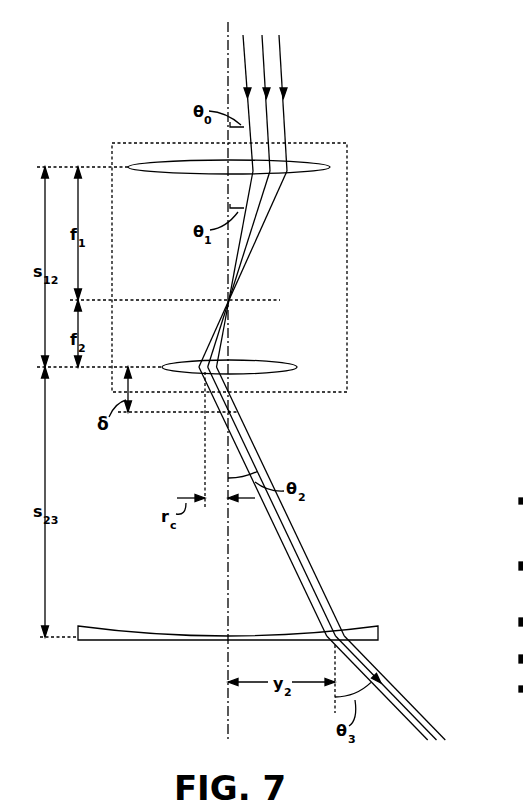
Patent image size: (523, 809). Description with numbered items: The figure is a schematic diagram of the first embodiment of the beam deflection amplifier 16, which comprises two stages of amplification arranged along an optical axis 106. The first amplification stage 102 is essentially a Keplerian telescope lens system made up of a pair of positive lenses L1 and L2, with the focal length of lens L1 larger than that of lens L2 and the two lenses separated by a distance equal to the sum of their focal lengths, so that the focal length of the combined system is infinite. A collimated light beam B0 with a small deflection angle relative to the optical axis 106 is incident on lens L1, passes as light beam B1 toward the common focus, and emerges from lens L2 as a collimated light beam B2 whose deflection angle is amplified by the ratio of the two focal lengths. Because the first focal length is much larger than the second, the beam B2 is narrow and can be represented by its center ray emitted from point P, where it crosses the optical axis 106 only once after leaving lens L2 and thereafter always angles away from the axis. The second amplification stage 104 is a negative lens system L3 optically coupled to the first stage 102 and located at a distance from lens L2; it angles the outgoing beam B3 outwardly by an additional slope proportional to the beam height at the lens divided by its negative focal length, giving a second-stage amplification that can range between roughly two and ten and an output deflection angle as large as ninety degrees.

The beam deflection amplifier 16 is at (220, 222).
The first amplification stage 102 is at (348, 250).
The second amplification stage 104 is at (247, 606).
The optical axis 106 is at (226, 595).
The lens L1 is at (330, 167).
The lens L2 is at (297, 367).
The negative lens L3 is at (378, 628).
The collimated light beam B0 is at (277, 78).
The light beam B1 is at (271, 207).
The light beam B2 is at (310, 563).
The beam B3 is at (417, 711).
The point P is at (237, 412).